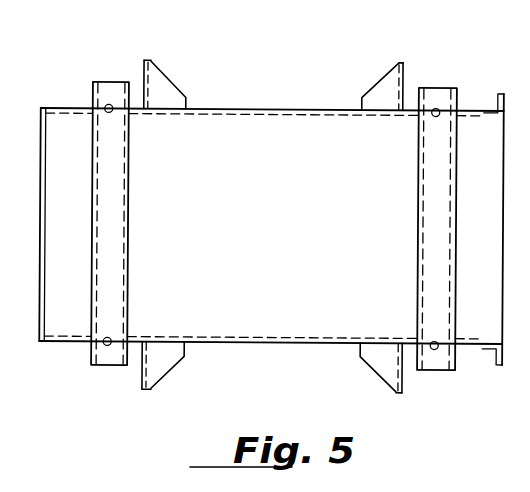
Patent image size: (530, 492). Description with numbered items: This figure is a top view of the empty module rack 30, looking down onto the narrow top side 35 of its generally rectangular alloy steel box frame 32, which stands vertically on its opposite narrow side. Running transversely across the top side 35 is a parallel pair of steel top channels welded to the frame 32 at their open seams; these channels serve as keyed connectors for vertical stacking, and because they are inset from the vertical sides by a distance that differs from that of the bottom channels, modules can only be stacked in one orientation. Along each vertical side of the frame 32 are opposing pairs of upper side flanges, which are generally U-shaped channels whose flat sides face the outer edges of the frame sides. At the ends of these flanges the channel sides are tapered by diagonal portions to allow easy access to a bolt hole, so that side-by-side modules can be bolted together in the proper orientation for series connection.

The module rack 30 is at (316, 85).
The box frame 32 is at (41, 120).
The top side 35 is at (322, 285).